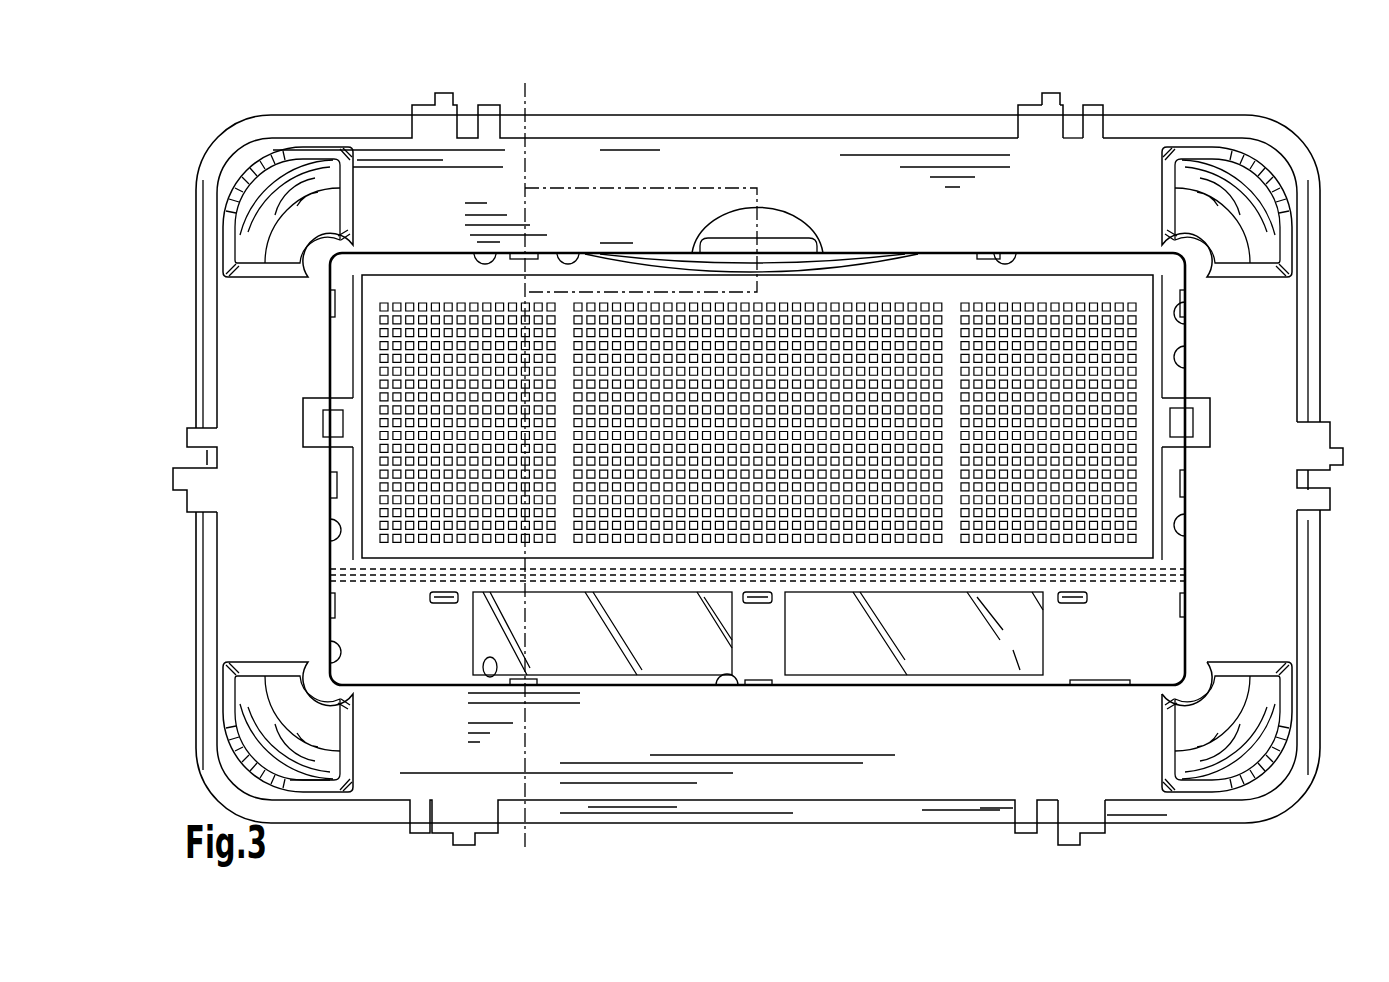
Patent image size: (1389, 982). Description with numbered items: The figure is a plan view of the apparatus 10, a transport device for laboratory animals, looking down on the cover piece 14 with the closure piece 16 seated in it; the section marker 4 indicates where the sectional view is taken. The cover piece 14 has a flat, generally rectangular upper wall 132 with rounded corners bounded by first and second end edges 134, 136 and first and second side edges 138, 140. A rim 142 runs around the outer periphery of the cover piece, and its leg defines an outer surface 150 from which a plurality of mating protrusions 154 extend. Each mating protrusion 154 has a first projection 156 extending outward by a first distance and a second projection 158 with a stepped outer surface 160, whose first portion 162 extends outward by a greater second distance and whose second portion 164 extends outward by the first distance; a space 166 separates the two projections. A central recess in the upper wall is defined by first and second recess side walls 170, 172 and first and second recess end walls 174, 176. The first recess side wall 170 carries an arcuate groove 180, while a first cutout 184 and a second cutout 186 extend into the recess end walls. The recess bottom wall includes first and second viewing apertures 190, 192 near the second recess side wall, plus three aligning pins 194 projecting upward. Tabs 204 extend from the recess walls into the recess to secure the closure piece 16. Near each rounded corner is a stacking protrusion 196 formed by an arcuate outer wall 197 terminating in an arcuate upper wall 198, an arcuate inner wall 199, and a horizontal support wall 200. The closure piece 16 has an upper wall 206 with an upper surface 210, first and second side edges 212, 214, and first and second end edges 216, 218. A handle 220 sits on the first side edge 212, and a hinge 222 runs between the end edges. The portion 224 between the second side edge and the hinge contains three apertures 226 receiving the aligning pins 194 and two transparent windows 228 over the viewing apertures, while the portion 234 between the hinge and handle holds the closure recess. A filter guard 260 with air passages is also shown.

The apparatus 10 is at (192, 110).
The cover piece 14 is at (396, 190).
The closure piece 16 is at (1152, 615).
The upper wall 132 is at (265, 320).
The first end edge 134 is at (212, 563).
The second end edge 136 is at (1297, 357).
The first side edge 138 is at (785, 137).
The second side edge 140 is at (898, 798).
The rim 142 is at (203, 655).
The outer surface 150 is at (825, 805).
The mating protrusion 154 is at (1325, 443).
The first projection 156 is at (1095, 120).
The second projection 158 is at (1013, 123).
The stepped outer surface 160 is at (1040, 103).
The first portion 162 is at (1068, 80).
The second portion 164 is at (1018, 104).
The space 166 is at (1080, 95).
The first recess side wall 170 is at (566, 248).
The second recess side wall 172 is at (730, 668).
The first recess end wall 174 is at (330, 518).
The second recess end wall 176 is at (1188, 512).
The arcuate groove 180 is at (777, 222).
The first cutout 184 is at (310, 399).
The second cutout 186 is at (1203, 398).
The first viewing aperture 190 is at (652, 650).
The second viewing aperture 192 is at (932, 648).
The aligning pin 194 is at (757, 603).
The stacking protrusion 196 is at (1204, 170).
The arcuate outer wall 197 is at (1253, 780).
The arcuate upper wall 198 is at (1205, 767).
The arcuate inner wall 199 is at (1177, 685).
The horizontal support wall 200 is at (1220, 712).
The tab 204 is at (1013, 250).
The upper wall 206 is at (1168, 557).
The upper surface 210 is at (372, 653).
The first side edge 212 is at (493, 248).
The second side edge 214 is at (482, 673).
The first end edge 216 is at (328, 660).
The second end edge 218 is at (1188, 365).
The handle 220 is at (793, 243).
The hinge 222 is at (355, 578).
The portion 224 is at (1143, 638).
The aperture 226 is at (453, 603).
The window 228 is at (605, 657).
The portion 234 is at (363, 265).
The filter guard 260 is at (375, 355).
The section line 4 is at (525, 83).